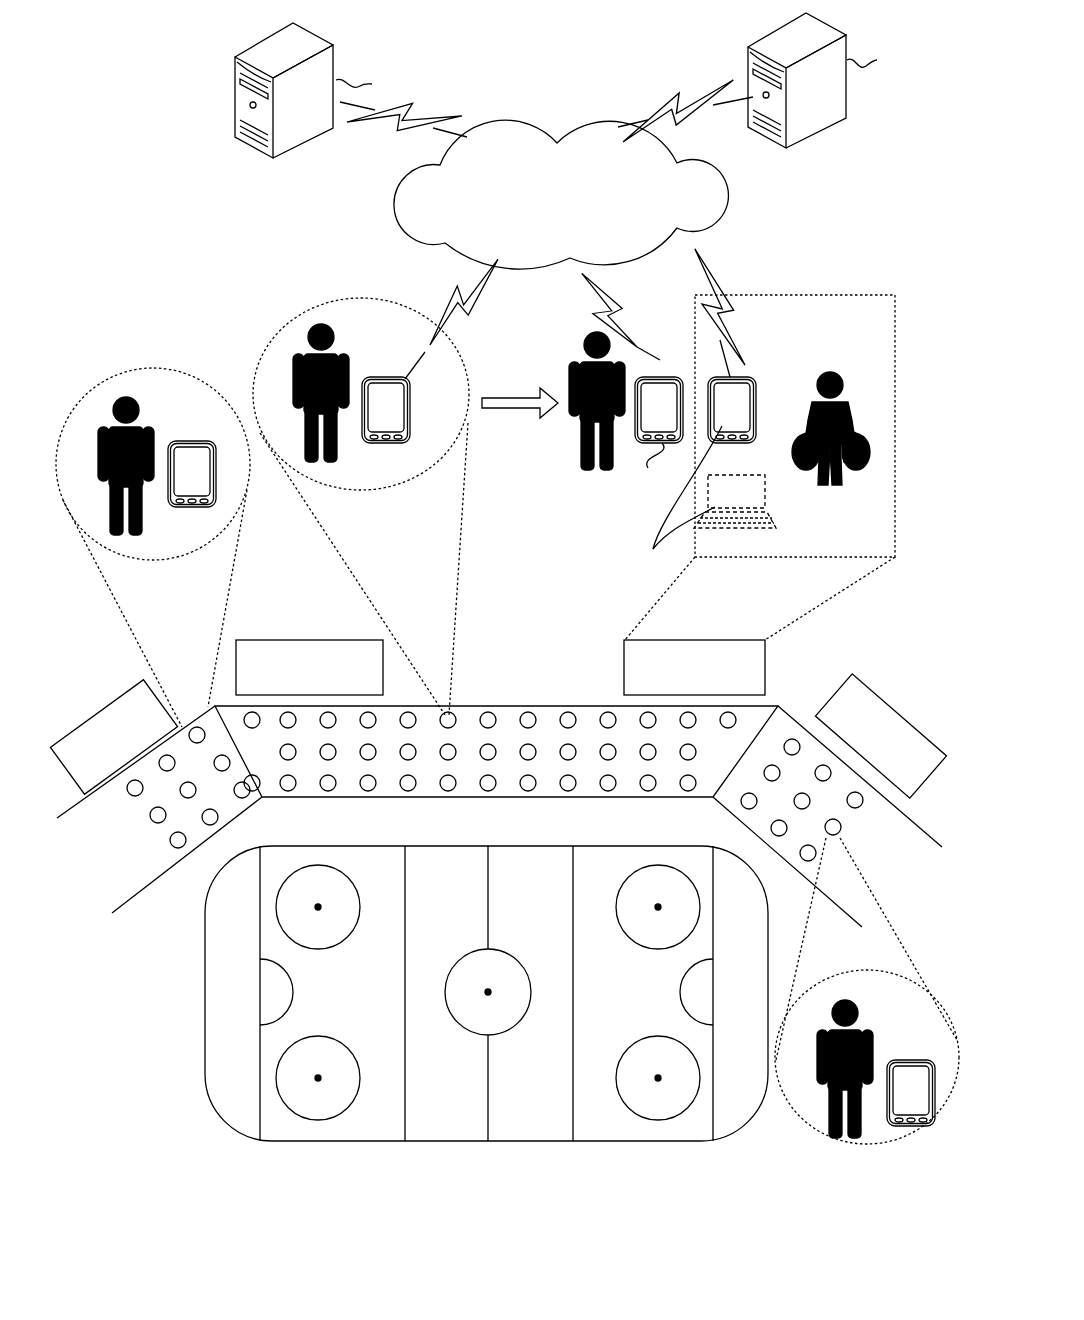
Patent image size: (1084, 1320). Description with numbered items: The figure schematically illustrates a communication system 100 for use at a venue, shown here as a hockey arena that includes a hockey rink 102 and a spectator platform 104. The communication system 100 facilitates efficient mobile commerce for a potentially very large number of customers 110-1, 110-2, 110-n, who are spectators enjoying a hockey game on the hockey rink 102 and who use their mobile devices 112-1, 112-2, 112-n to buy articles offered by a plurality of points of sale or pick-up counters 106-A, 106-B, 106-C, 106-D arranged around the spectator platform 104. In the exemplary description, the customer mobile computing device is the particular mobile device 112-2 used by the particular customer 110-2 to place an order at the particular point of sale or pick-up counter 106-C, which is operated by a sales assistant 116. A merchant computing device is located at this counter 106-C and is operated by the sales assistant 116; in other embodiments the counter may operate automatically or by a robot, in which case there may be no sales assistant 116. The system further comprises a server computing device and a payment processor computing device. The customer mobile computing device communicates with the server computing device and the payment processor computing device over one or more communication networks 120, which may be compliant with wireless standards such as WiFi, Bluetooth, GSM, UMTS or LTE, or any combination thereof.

The communication system 100 is at (176, 268).
The communication networks 120 is at (575, 178).
The customer 110-1 is at (105, 424).
The mobile device 112-1 is at (205, 440).
The customer 110-2 is at (304, 350).
The mobile device 112-2 is at (386, 378).
The sales assistant 116 is at (823, 373).
The spectator platform 104 is at (466, 799).
The point of sale or pick-up counter 106-A is at (95, 715).
The point of sale or pick-up counter 106-B is at (290, 640).
The point of sale or pick-up counter 106-C is at (623, 658).
The point of sale or pick-up counter 106-D is at (918, 732).
The hockey rink 102 is at (372, 1142).
The customer 110-n is at (811, 1176).
The mobile device 112-n is at (915, 1135).